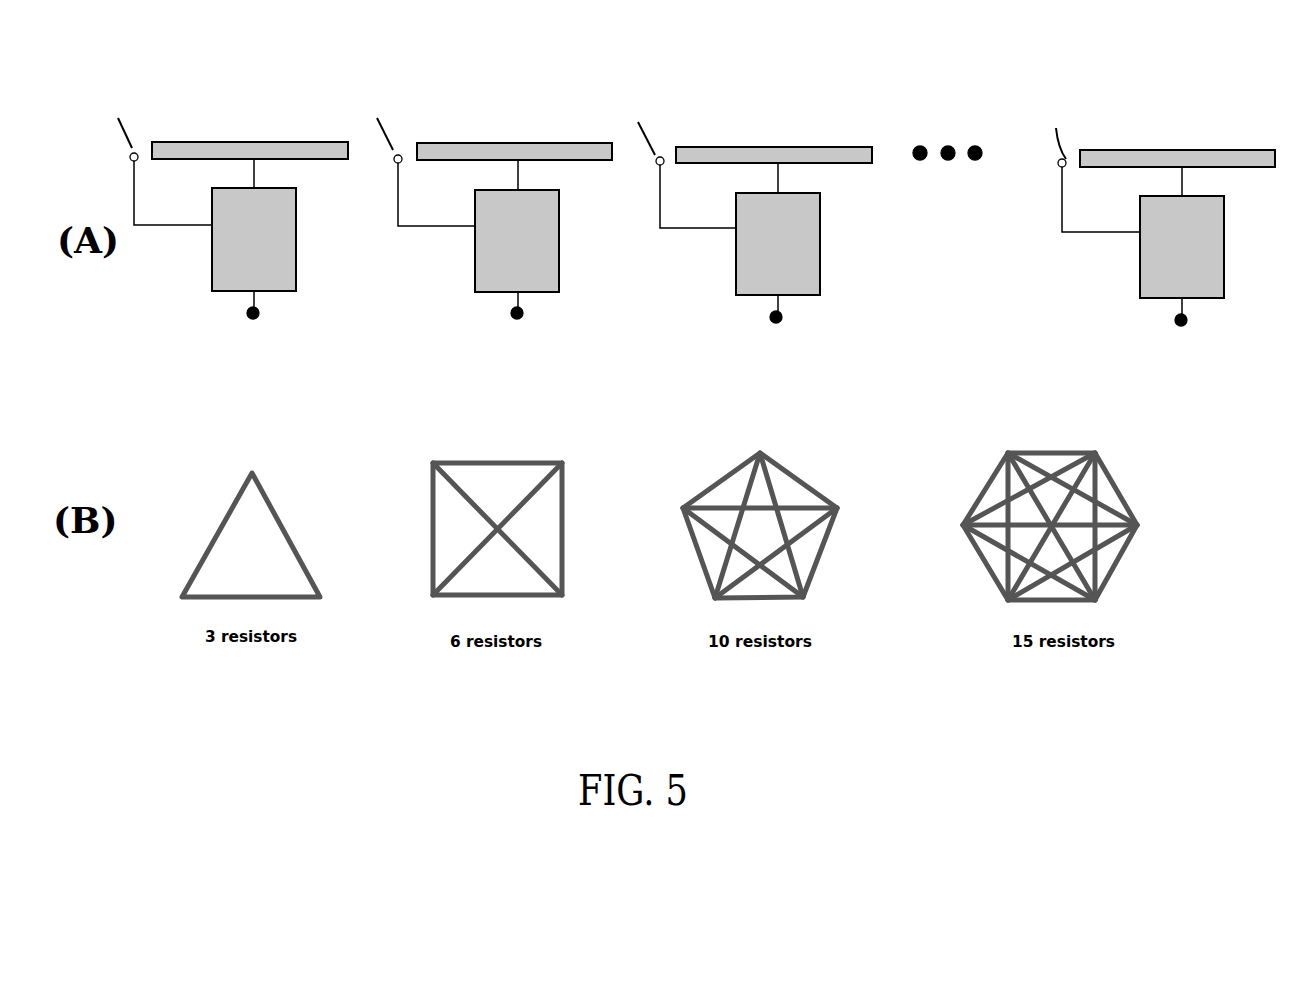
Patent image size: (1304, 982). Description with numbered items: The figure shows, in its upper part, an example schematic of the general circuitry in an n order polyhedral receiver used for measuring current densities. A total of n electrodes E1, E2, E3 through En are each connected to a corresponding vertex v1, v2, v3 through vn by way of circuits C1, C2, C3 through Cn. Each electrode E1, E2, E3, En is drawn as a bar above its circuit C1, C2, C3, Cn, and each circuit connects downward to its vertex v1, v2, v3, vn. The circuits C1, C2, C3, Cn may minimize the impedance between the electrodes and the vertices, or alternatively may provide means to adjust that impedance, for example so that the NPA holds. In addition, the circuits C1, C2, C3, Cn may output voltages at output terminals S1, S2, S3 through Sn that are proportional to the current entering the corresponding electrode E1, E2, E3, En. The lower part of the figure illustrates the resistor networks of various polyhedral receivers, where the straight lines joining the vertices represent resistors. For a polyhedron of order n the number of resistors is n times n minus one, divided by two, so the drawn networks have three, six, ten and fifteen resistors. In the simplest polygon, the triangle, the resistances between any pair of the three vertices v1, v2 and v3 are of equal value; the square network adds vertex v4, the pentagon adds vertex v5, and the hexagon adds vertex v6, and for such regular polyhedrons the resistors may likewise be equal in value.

In FIG. 5A, the output terminal S1 is at (162, 156).
In FIG. 5A, the output terminal S2 is at (423, 157).
In FIG. 5A, the output terminal S3 is at (687, 159).
In FIG. 5A, the output terminal Sn is at (1097, 164).
In FIG. 5A, the electrode E1 is at (271, 153).
In FIG. 5A, the electrode E2 is at (540, 153).
In FIG. 5A, the electrode E3 is at (793, 157).
In FIG. 5A, the electrode En is at (1187, 162).
In FIG. 5A, the circuit C1 is at (268, 264).
In FIG. 5A, the circuit C2 is at (534, 267).
In FIG. 5A, the circuit C3 is at (794, 268).
In FIG. 5A, the circuit Cn is at (1199, 274).
In FIG. 5A, the vertex v1 is at (248, 315).
In FIG. 5B, the vertex v1 is at (556, 559).
In FIG. 5A, the vertex v2 is at (512, 315).
In FIG. 5B, the vertex v2 is at (670, 615).
In FIG. 5A, the vertex v3 is at (771, 319).
In FIG. 5B, the vertex v3 is at (686, 538).
In FIG. 5B, the vertex v4 is at (788, 490).
In FIG. 5B, the vertex v5 is at (941, 442).
In FIG. 5B, the vertex v6 is at (988, 441).
In FIG. 5A, the vertex vn is at (1176, 321).